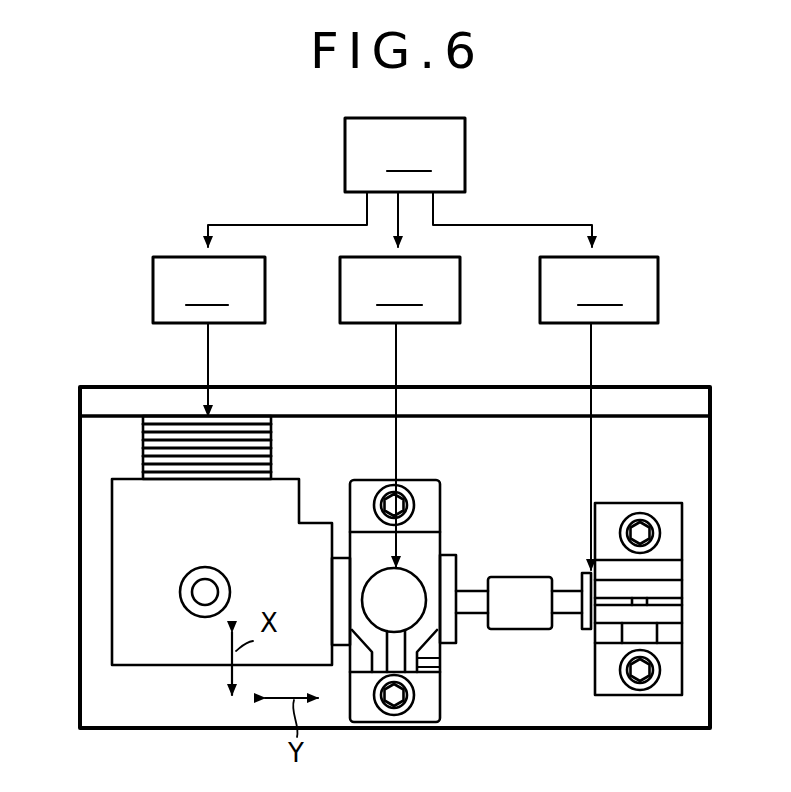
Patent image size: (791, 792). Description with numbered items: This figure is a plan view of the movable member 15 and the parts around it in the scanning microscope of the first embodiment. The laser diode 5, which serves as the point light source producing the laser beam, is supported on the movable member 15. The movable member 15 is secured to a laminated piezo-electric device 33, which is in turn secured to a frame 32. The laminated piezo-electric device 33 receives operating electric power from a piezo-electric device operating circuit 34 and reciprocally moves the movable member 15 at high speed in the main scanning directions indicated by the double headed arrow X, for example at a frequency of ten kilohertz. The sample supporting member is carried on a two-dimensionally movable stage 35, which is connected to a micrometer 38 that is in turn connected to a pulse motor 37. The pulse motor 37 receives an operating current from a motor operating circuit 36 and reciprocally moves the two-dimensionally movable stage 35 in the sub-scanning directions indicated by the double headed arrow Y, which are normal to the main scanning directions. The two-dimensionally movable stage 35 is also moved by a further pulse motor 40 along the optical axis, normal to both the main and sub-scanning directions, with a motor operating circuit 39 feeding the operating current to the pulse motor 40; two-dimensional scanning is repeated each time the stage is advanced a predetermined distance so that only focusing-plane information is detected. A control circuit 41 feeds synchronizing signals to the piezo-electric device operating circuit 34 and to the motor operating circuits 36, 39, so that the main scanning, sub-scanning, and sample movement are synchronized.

The laser diode 5 is at (208, 578).
The movable member 15 is at (168, 643).
The frame 32 is at (688, 398).
The laminated piezo-electric device 33 is at (143, 447).
The piezo-electric device operating circuit 34 is at (209, 336).
The two-dimensionally movable stage 35 is at (315, 543).
The motor operating circuit 36 is at (611, 476).
The pulse motor 37 is at (586, 631).
The micrometer 38 is at (528, 595).
The motor operating circuit 39 is at (400, 489).
The pulse motor 40 is at (412, 612).
The control circuit 41 is at (400, 182).